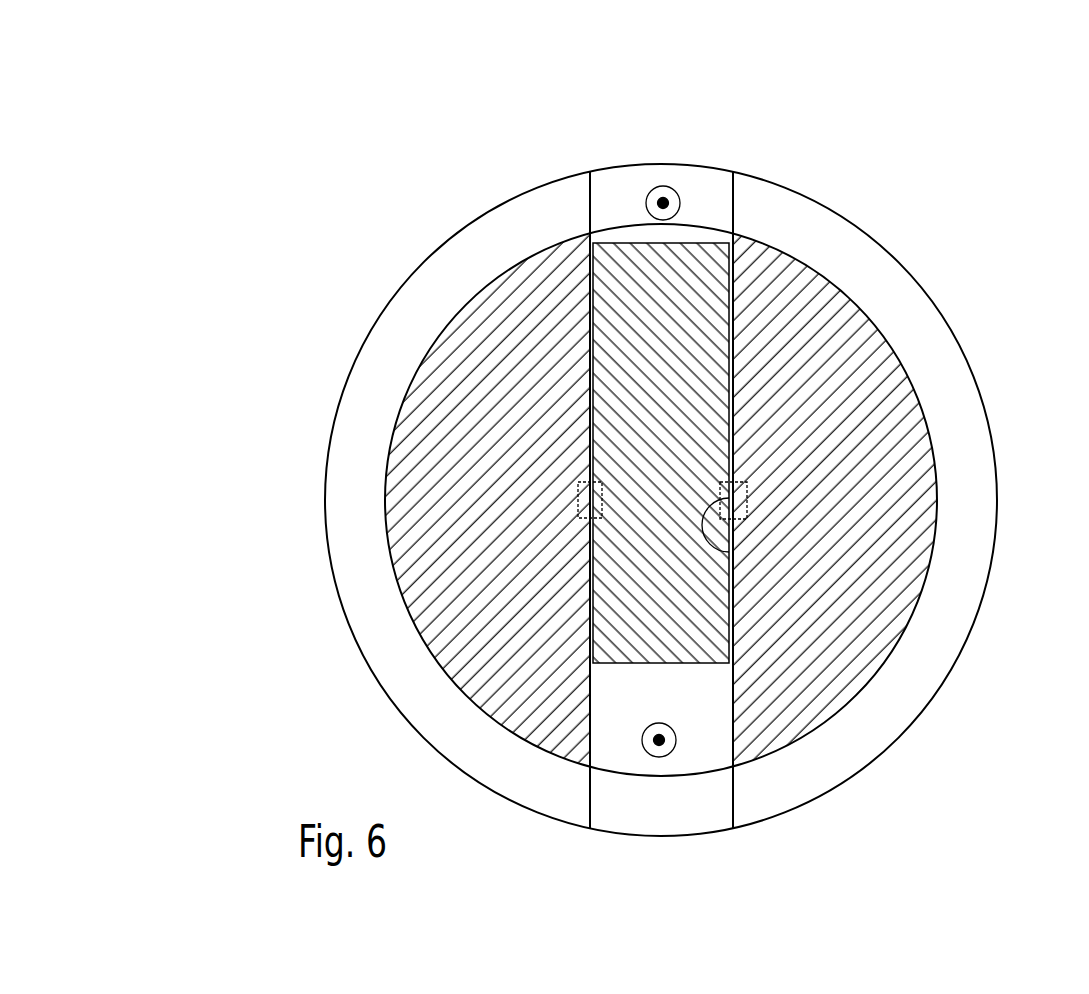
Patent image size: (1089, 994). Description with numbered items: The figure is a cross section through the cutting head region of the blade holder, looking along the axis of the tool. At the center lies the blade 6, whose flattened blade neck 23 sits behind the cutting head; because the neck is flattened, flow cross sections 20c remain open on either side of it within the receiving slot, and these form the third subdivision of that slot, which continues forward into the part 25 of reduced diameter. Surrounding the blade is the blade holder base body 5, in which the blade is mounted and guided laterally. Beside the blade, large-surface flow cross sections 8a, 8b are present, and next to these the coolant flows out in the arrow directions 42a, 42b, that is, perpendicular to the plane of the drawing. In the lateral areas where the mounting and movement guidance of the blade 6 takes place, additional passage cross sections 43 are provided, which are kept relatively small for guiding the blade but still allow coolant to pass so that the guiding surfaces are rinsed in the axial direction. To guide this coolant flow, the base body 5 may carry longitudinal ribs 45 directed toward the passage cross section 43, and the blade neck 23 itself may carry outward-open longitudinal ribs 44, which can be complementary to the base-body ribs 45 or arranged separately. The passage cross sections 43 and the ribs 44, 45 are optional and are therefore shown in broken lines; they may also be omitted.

The blade holder base body 5 is at (621, 499).
The part of reduced diameter 25 is at (532, 416).
The blade 6 is at (695, 500).
The blade neck 23 is at (733, 433).
The flow cross section 20c is at (620, 183).
The large-surface flow cross section 8a is at (700, 733).
The large-surface flow cross section 8b is at (715, 215).
The arrow direction 42a is at (659, 740).
The arrow direction 42b is at (663, 203).
The passage cross section 43 is at (585, 505).
The longitudinal rib 44 is at (733, 561).
The longitudinal rib 45 is at (600, 499).